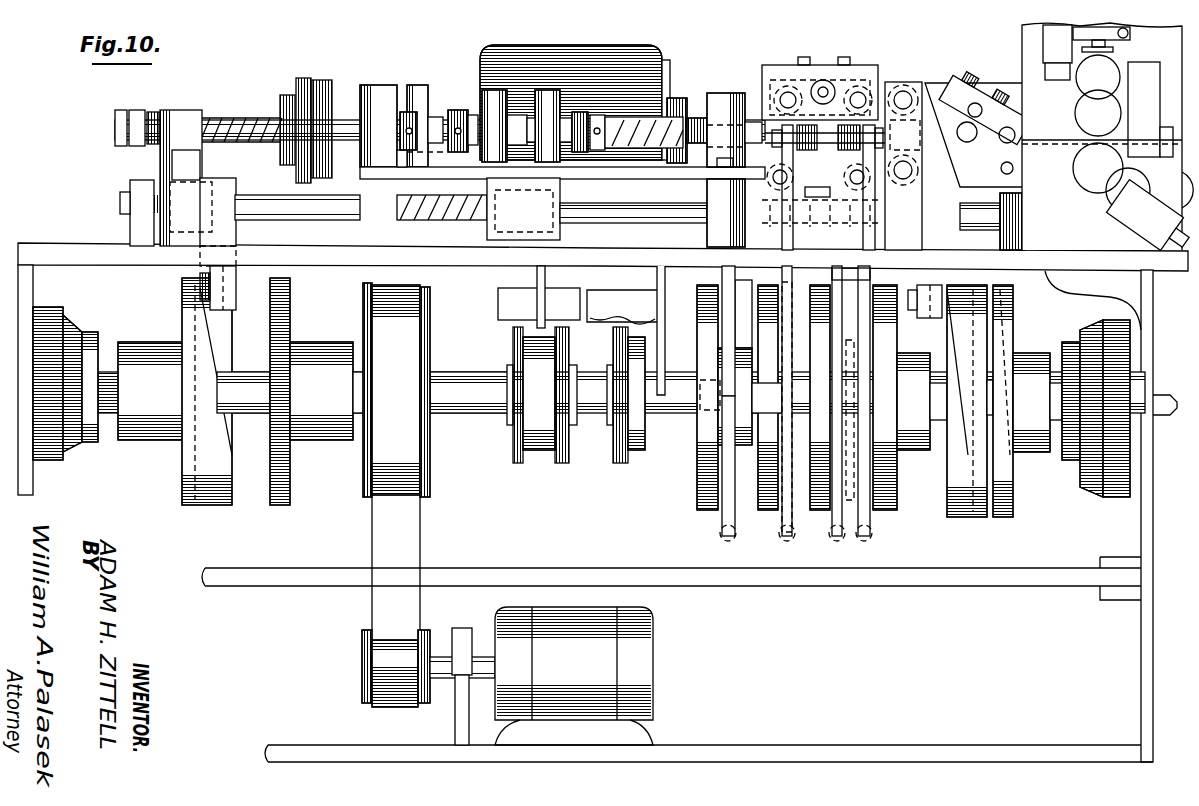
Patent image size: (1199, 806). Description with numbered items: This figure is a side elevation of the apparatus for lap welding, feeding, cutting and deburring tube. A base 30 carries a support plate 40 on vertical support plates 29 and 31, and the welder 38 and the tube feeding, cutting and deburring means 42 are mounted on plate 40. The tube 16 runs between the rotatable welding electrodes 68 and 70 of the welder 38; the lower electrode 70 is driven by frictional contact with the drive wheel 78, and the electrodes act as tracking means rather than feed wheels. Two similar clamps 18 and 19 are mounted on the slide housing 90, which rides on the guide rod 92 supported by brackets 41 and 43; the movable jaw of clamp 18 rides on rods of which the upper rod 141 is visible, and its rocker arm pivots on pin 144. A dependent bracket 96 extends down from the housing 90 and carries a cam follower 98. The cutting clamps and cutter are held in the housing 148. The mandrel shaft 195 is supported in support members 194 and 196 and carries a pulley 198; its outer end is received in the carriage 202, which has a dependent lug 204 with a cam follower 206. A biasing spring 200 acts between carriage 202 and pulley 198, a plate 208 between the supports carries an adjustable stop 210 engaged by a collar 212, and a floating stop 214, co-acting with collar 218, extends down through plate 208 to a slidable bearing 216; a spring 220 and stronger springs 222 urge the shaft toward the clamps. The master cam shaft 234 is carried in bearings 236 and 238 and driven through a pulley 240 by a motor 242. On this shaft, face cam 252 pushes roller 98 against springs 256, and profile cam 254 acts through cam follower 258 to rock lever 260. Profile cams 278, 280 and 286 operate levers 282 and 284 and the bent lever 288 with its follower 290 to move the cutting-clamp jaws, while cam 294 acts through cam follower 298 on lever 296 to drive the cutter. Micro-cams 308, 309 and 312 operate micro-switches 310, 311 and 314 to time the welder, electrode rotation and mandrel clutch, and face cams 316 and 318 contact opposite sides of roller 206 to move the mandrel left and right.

The tube 16 is at (1075, 129).
The clamp 18 is at (1000, 162).
The clamp 19 is at (928, 95).
The vertical support plate 29 is at (33, 280).
The base 30 is at (257, 567).
The vertical support plate 31 is at (1152, 318).
The welder 38 is at (1025, 45).
The support plate 40 is at (78, 246).
The bracket 41 is at (125, 186).
The tube feeding, cutting and deburring means 42 is at (882, 78).
The bracket 43 is at (1022, 195).
The upper welding electrode 68 is at (1076, 110).
The lower welding electrode 70 is at (1148, 190).
The drive wheel 78 is at (1132, 210).
The slide housing 90 is at (958, 228).
The guide rod 92 is at (682, 212).
The dependent bracket 96 is at (942, 320).
The cam follower 98 is at (912, 318).
The upper rod 141 is at (968, 105).
The pin 144 is at (1000, 100).
The housing 148 is at (812, 48).
The support member 194 is at (364, 95).
The shaft 195 is at (262, 125).
The support member 196 is at (717, 105).
The pulley 198 is at (296, 80).
The biasing spring 200 is at (240, 117).
The carriage 202 is at (207, 195).
The dependent lug 204 is at (220, 312).
The cam follower 206 is at (203, 285).
The plate 208 is at (434, 168).
The adjustable stop 210 is at (458, 118).
The collar 212 is at (410, 114).
The floating stop 214 is at (548, 95).
The slidable bearing 216 is at (537, 230).
The collar 218 is at (598, 118).
The spring 220 is at (671, 128).
The spring 222 is at (452, 225).
The master cam shaft 234 is at (480, 413).
The bearing 236 is at (75, 325).
The bearing 238 is at (1100, 492).
The pulley 240 is at (431, 340).
The motor 242 is at (627, 612).
The face cam 252 is at (966, 503).
The profile cam 254 is at (998, 520).
The spring 256 is at (702, 268).
The cam follower 258 is at (1013, 467).
The lever 260 is at (1024, 352).
The profile cam 278 is at (786, 536).
The profile cam 280 is at (893, 522).
The lever 282 is at (787, 545).
The lever 284 is at (866, 545).
The profile cam 286 is at (695, 490).
The lever 288 is at (722, 534).
The follower 290 is at (705, 420).
The cam 294 is at (820, 522).
The lever 296 is at (837, 545).
The cam follower 298 is at (786, 420).
The micro-cam 308 is at (512, 462).
The micro-cam 309 is at (558, 464).
The micro-switch 310 is at (498, 300).
The micro-switch 311 is at (565, 296).
The micro cam 312 is at (625, 464).
The micro switch 314 is at (620, 305).
The face cam 316 is at (290, 497).
The face cam 318 is at (213, 506).